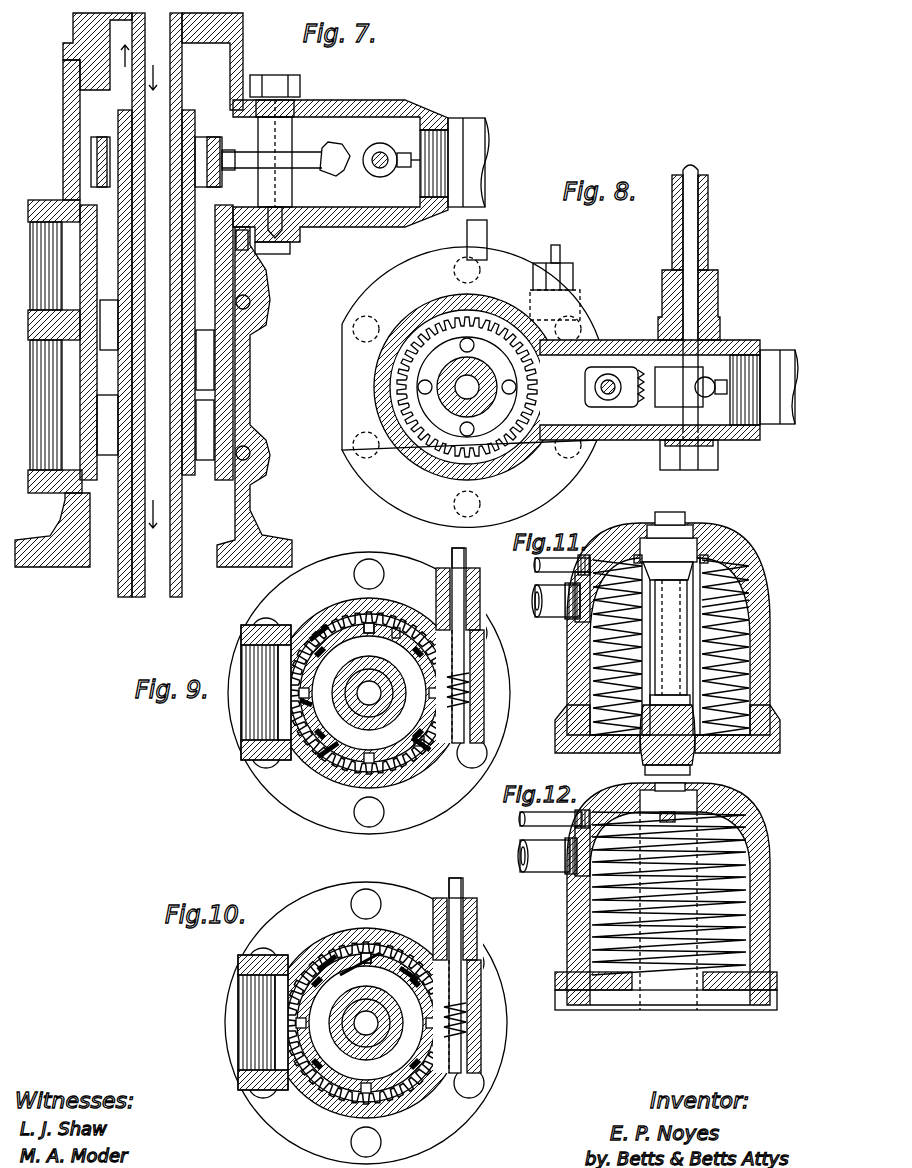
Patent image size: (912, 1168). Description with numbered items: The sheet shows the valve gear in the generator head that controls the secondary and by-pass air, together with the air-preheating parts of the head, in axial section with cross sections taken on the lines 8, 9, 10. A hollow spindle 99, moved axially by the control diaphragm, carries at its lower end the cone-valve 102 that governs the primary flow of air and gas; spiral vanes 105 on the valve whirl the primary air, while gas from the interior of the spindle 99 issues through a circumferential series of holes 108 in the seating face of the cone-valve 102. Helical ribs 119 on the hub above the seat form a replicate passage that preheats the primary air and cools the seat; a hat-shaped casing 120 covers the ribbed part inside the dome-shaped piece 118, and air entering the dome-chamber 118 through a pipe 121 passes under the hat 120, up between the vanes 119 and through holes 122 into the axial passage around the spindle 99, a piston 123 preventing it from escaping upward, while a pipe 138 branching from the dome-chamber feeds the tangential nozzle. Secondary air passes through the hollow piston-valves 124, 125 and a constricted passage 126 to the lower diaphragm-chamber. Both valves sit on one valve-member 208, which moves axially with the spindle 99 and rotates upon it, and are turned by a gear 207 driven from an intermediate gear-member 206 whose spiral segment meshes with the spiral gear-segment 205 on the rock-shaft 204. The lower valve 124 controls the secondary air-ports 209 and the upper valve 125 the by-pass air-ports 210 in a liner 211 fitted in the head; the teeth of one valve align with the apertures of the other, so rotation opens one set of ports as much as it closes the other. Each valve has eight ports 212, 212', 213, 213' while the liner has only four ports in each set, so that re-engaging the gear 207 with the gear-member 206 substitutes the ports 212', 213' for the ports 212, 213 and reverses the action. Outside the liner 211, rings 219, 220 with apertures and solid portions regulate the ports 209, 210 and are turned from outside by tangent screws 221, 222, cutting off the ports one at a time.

In FIG. 7, the hollow spindle 99 is at (128, 583).
In FIG. 11, the hollow spindle 99 is at (672, 655).
In FIG. 7, the constricted passage 126 is at (187, 27).
In FIG. 7, the gear 207 is at (100, 140).
In FIG. 8, the gear 207 is at (494, 438).
In FIG. 7, the section line 8 is at (530, 160).
In FIG. 7, the section line 9 is at (215, 267).
In FIG. 7, the section line 10 is at (235, 420).
In FIG. 7, the intermediate gear-member 206 is at (300, 160).
In FIG. 8, the intermediate gear-member 206 is at (612, 376).
In FIG. 7, the spiral gear-segment 205 is at (344, 145).
In FIG. 8, the spiral gear-segment 205 is at (667, 400).
In FIG. 7, the rock-shaft 204 is at (382, 155).
In FIG. 8, the rock-shaft 204 is at (690, 333).
In FIG. 7, the upper piston-valve 125 is at (270, 250).
In FIG. 9, the upper piston-valve 125 is at (330, 633).
In FIG. 7, the by-pass air-ports 210 is at (250, 262).
In FIG. 9, the by-pass air-ports 210 is at (371, 625).
In FIG. 7, the valve-member 208 is at (192, 350).
In FIG. 7, the lower piston-valve 124 is at (212, 398).
In FIG. 10, the lower piston-valve 124 is at (300, 1033).
In FIG. 7, the secondary air-ports 209 is at (222, 420).
In FIG. 10, the secondary air-ports 209 is at (372, 955).
In FIG. 7, the liner 211 is at (222, 492).
In FIG. 9, the liner 211 is at (395, 630).
In FIG. 9, the valve port 213 is at (315, 774).
In FIG. 9, the alternative valve port 213' is at (300, 719).
In FIG. 9, the tangent screw 222 is at (475, 698).
In FIG. 9, the adjusting ring 220 is at (423, 758).
In FIG. 10, the valve port 212 is at (408, 937).
In FIG. 10, the alternative valve port 212' is at (325, 921).
In FIG. 10, the adjusting ring 219 is at (330, 968).
In FIG. 10, the tangent screw 221 is at (475, 1030).
In FIG. 11, the holes 122 is at (633, 558).
In FIG. 12, the holes 122 is at (672, 812).
In FIG. 11, the piston 123 is at (655, 552).
In FIG. 12, the piston 123 is at (660, 802).
In FIG. 11, the pipe 138 is at (556, 570).
In FIG. 12, the pipe 138 is at (540, 824).
In FIG. 11, the pipe 121 is at (553, 606).
In FIG. 12, the pipe 121 is at (541, 866).
In FIG. 11, the hat-shaped casing 120 is at (590, 643).
In FIG. 12, the hat-shaped casing 120 is at (742, 818).
In FIG. 11, the helical ribs 119 is at (592, 660).
In FIG. 12, the helical ribs 119 is at (750, 840).
In FIG. 11, the dome-shaped piece 118 is at (758, 688).
In FIG. 12, the dome-shaped piece 118 is at (762, 893).
In FIG. 11, the gas holes 108 is at (640, 758).
In FIG. 11, the spiral vanes 105 is at (668, 712).
In FIG. 11, the cone-valve 102 is at (748, 740).